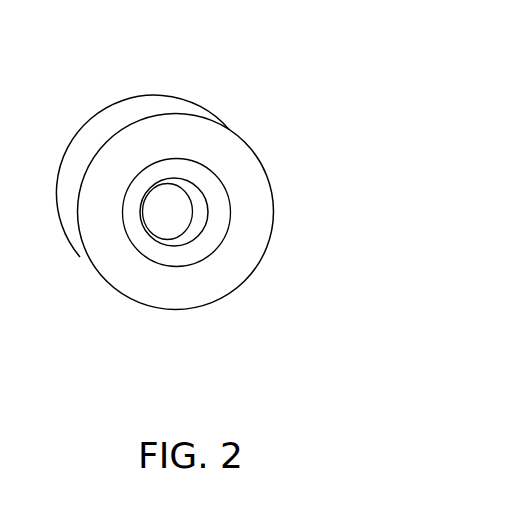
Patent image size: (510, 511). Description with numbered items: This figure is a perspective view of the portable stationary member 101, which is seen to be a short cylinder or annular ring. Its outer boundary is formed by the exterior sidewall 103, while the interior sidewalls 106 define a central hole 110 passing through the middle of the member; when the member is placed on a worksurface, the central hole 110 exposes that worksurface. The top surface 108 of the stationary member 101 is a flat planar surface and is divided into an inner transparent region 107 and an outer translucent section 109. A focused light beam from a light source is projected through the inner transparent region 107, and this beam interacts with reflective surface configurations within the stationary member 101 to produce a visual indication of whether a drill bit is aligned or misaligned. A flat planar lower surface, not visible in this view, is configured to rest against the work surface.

The portable stationary member 101 is at (219, 193).
The exterior sidewall 103 is at (81, 257).
The interior sidewalls 106 is at (198, 205).
The inner transparent region 107 is at (166, 174).
The top surface 108 is at (253, 239).
The outer translucent section 109 is at (235, 200).
The central hole 110 is at (185, 220).